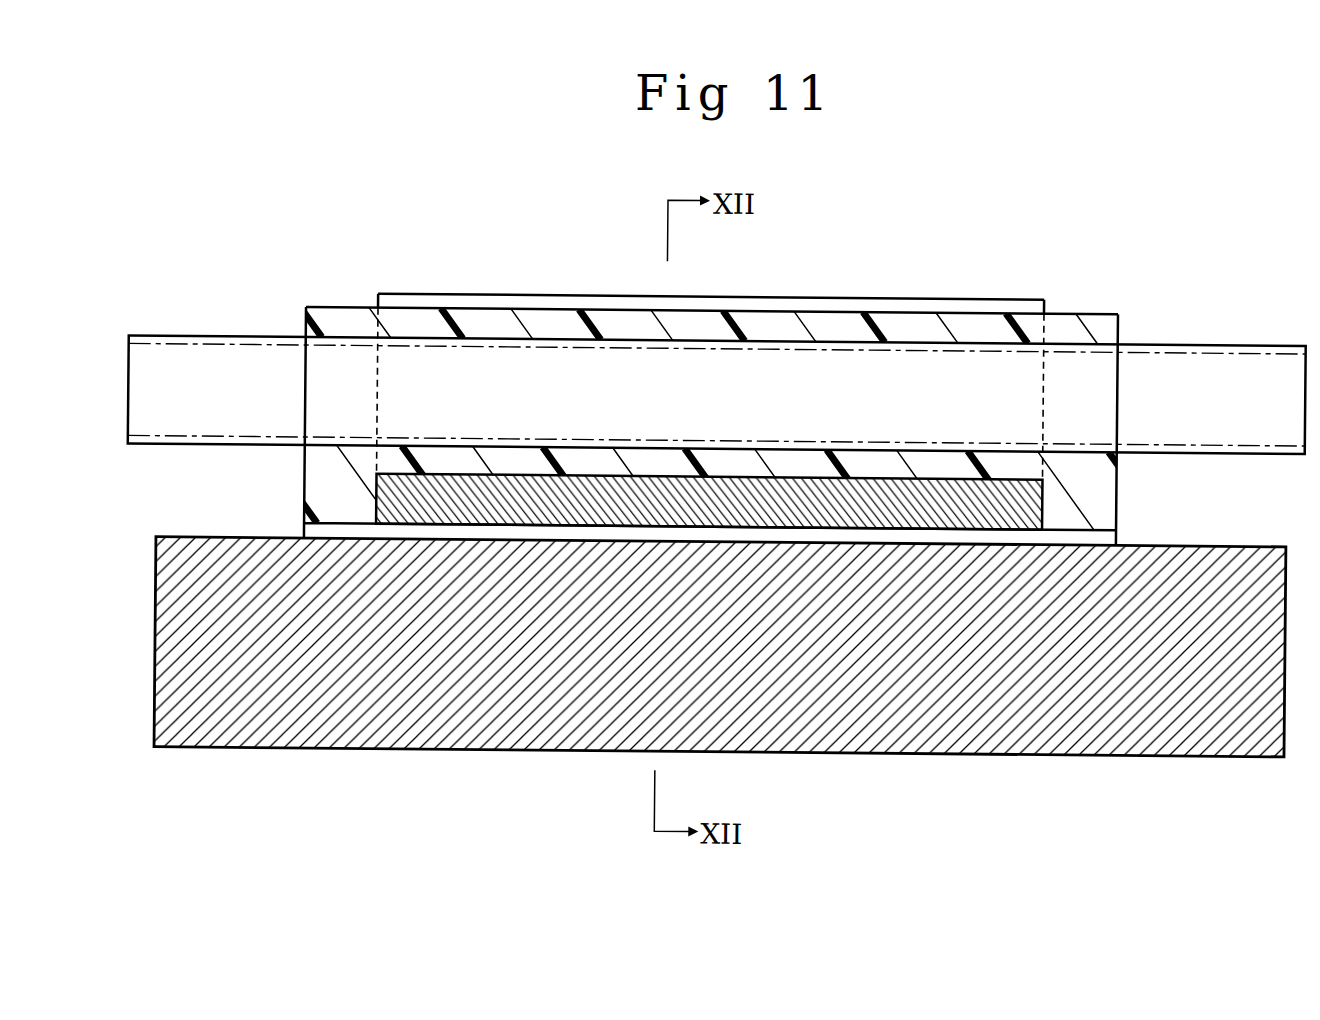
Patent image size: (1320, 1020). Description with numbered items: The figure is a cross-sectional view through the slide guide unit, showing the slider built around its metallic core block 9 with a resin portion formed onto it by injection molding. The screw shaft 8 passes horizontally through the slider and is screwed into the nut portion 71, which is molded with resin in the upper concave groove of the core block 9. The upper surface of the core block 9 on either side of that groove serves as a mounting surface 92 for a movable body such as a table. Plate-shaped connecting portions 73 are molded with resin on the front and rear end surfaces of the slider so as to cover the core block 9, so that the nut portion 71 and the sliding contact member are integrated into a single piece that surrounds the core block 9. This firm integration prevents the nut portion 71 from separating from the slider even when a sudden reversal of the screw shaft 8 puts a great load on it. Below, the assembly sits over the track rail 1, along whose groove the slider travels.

The track rail 1 is at (878, 762).
The screw shaft 8 is at (1211, 340).
The core block 9 is at (513, 498).
The nut portion 71 is at (846, 310).
The connecting portions 73 is at (337, 307).
The mounting surface 92 is at (1002, 300).